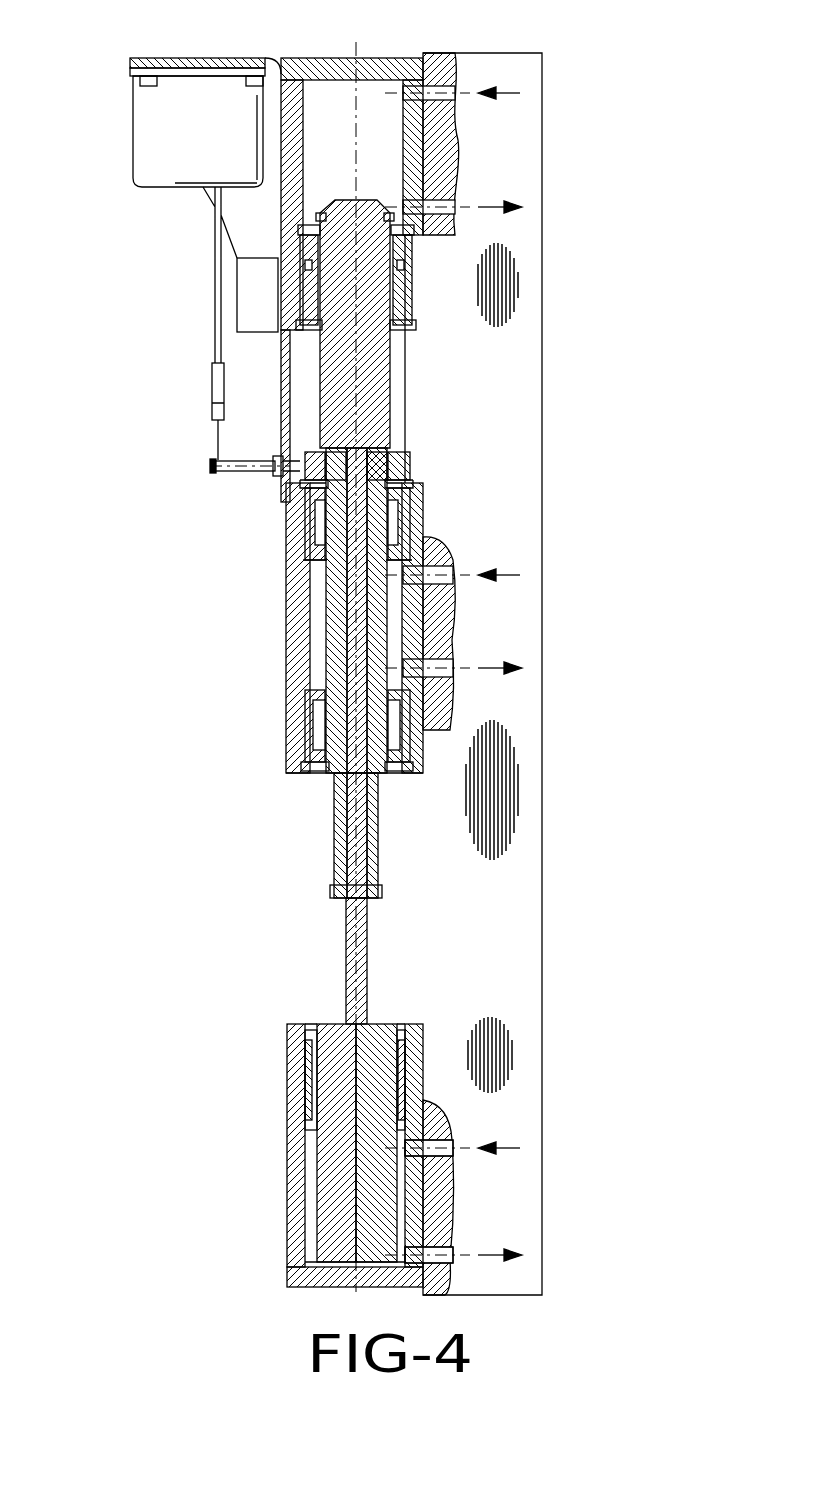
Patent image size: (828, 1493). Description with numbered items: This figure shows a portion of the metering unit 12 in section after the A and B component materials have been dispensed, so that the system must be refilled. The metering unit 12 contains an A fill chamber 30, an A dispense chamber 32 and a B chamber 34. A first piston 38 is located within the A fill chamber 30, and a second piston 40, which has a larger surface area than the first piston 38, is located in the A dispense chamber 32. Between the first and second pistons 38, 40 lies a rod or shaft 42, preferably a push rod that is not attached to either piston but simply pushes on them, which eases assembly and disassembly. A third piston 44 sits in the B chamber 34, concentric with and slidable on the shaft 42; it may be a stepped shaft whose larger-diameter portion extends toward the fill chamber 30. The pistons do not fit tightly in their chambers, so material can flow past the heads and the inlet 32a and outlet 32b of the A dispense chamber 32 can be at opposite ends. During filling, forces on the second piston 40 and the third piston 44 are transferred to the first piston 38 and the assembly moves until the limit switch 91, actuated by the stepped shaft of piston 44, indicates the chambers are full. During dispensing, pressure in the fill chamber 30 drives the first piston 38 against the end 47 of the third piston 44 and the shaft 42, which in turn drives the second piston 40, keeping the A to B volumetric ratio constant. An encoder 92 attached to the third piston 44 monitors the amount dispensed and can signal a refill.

The metering unit 12 is at (552, 123).
The "A" fill chamber 30 is at (336, 118).
The "A" dispense chamber 32 is at (318, 1250).
The inlet 32a is at (415, 1152).
The outlet 32b is at (415, 1252).
The "B" chamber 34 is at (318, 612).
The first piston 38 is at (383, 380).
The second piston 40 is at (333, 1162).
The rod or shaft 42 is at (345, 955).
The third piston 44 is at (318, 715).
The end of piston 44 47 is at (395, 470).
The limit switch 91 is at (262, 292).
The encoder 92 is at (170, 132).